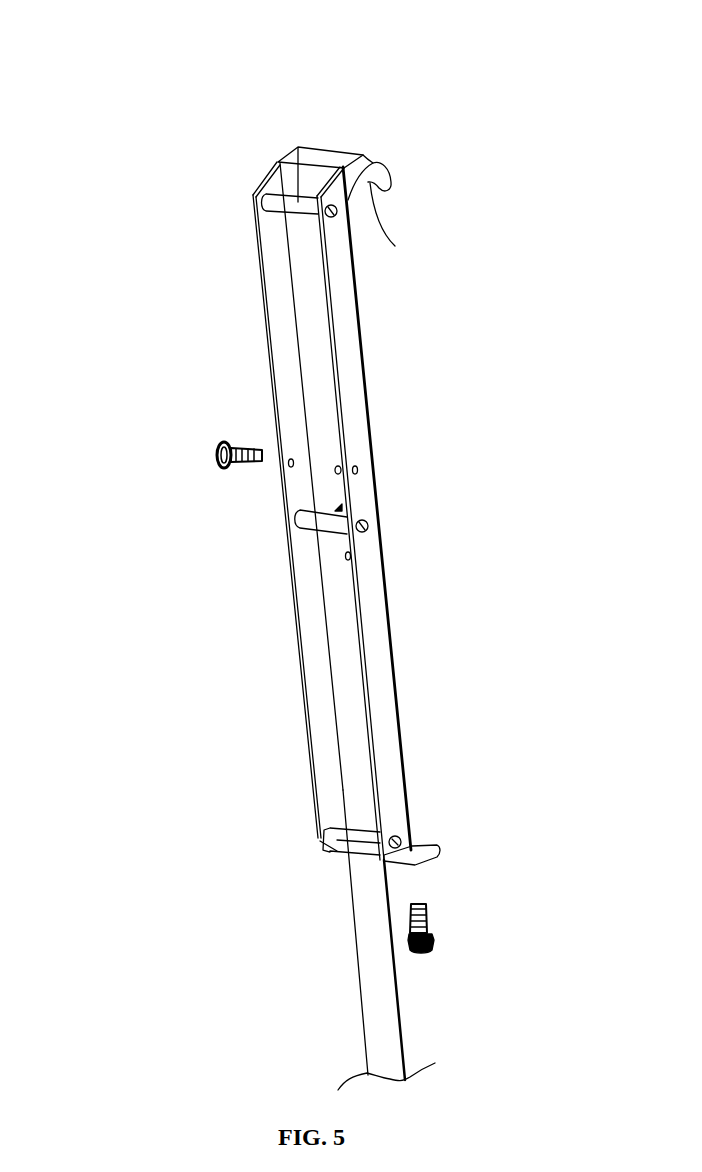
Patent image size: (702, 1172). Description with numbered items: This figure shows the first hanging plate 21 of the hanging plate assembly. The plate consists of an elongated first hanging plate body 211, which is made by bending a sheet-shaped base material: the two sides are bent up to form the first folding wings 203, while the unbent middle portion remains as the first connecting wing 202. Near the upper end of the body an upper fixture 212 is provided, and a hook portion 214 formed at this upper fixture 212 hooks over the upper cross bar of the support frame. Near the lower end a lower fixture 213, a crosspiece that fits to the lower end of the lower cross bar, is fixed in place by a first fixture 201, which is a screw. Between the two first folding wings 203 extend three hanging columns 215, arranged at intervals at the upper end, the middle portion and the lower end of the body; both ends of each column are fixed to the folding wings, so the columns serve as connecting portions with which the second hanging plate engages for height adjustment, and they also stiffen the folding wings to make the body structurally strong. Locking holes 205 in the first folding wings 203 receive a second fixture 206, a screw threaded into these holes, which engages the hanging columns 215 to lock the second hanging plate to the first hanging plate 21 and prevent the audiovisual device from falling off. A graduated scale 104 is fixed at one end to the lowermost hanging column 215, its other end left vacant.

The first hanging plate 21 is at (325, 483).
The scale 104 is at (363, 920).
The first fixture 201 is at (447, 922).
The first connecting wing 202 is at (308, 277).
The first folding wing 203 is at (356, 378).
The locking hole 205 is at (290, 462).
The second fixture 206 is at (207, 462).
The first hanging plate body 211 is at (393, 640).
The upper fixture 212 is at (375, 163).
The lower fixture 213 is at (415, 857).
The hook portion 214 is at (395, 246).
The hanging column 215 is at (290, 153).